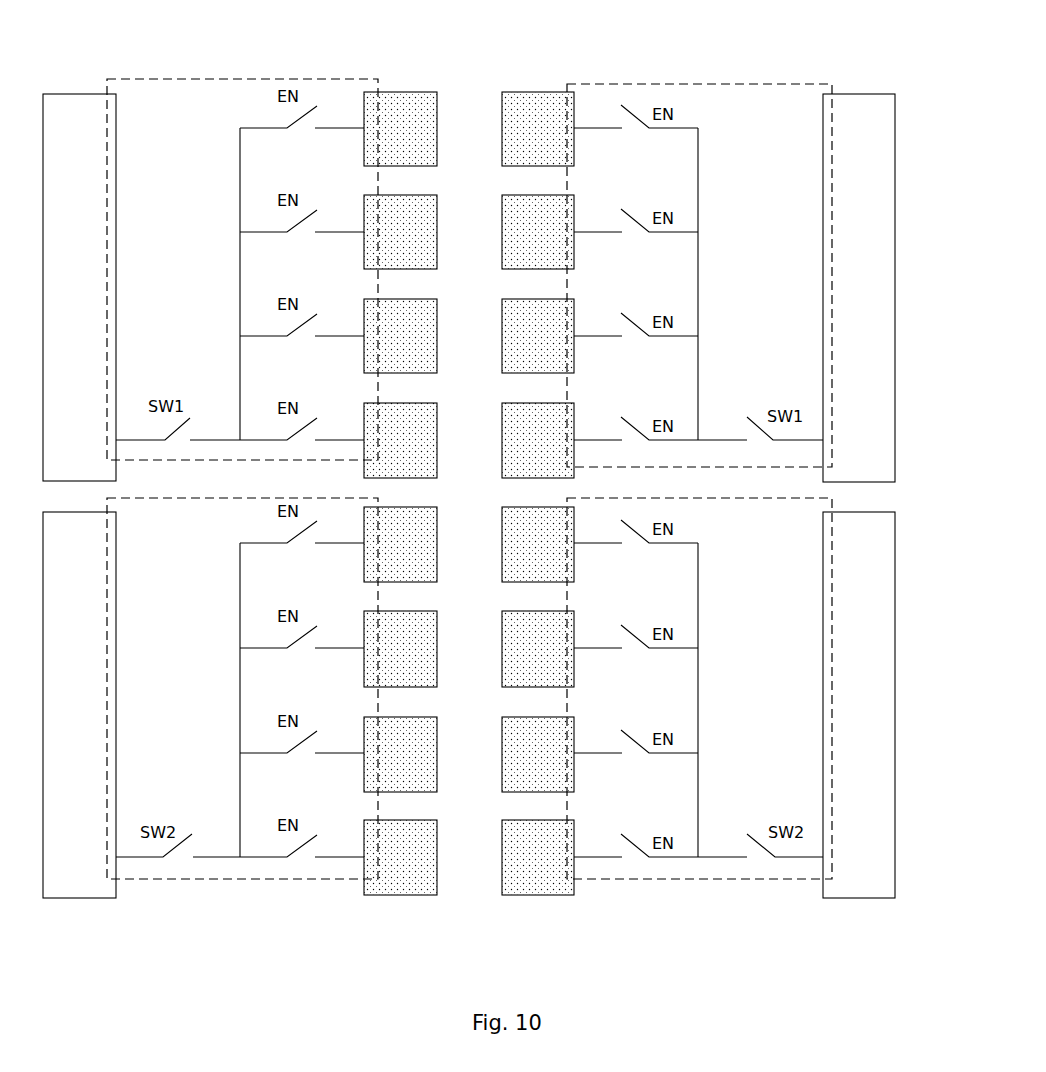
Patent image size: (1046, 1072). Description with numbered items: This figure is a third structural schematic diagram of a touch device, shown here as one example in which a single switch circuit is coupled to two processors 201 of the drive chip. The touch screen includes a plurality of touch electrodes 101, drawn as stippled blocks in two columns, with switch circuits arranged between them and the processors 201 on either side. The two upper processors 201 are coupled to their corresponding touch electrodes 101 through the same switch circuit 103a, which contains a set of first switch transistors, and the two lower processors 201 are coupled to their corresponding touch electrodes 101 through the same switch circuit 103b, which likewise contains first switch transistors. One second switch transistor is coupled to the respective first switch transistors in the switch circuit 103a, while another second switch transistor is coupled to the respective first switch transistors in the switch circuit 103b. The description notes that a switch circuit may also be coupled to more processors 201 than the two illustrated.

The touch electrode 101 is at (418, 92).
The switch circuit 103a is at (165, 79).
The switch circuit 103b is at (205, 879).
The processor 201 is at (895, 212).